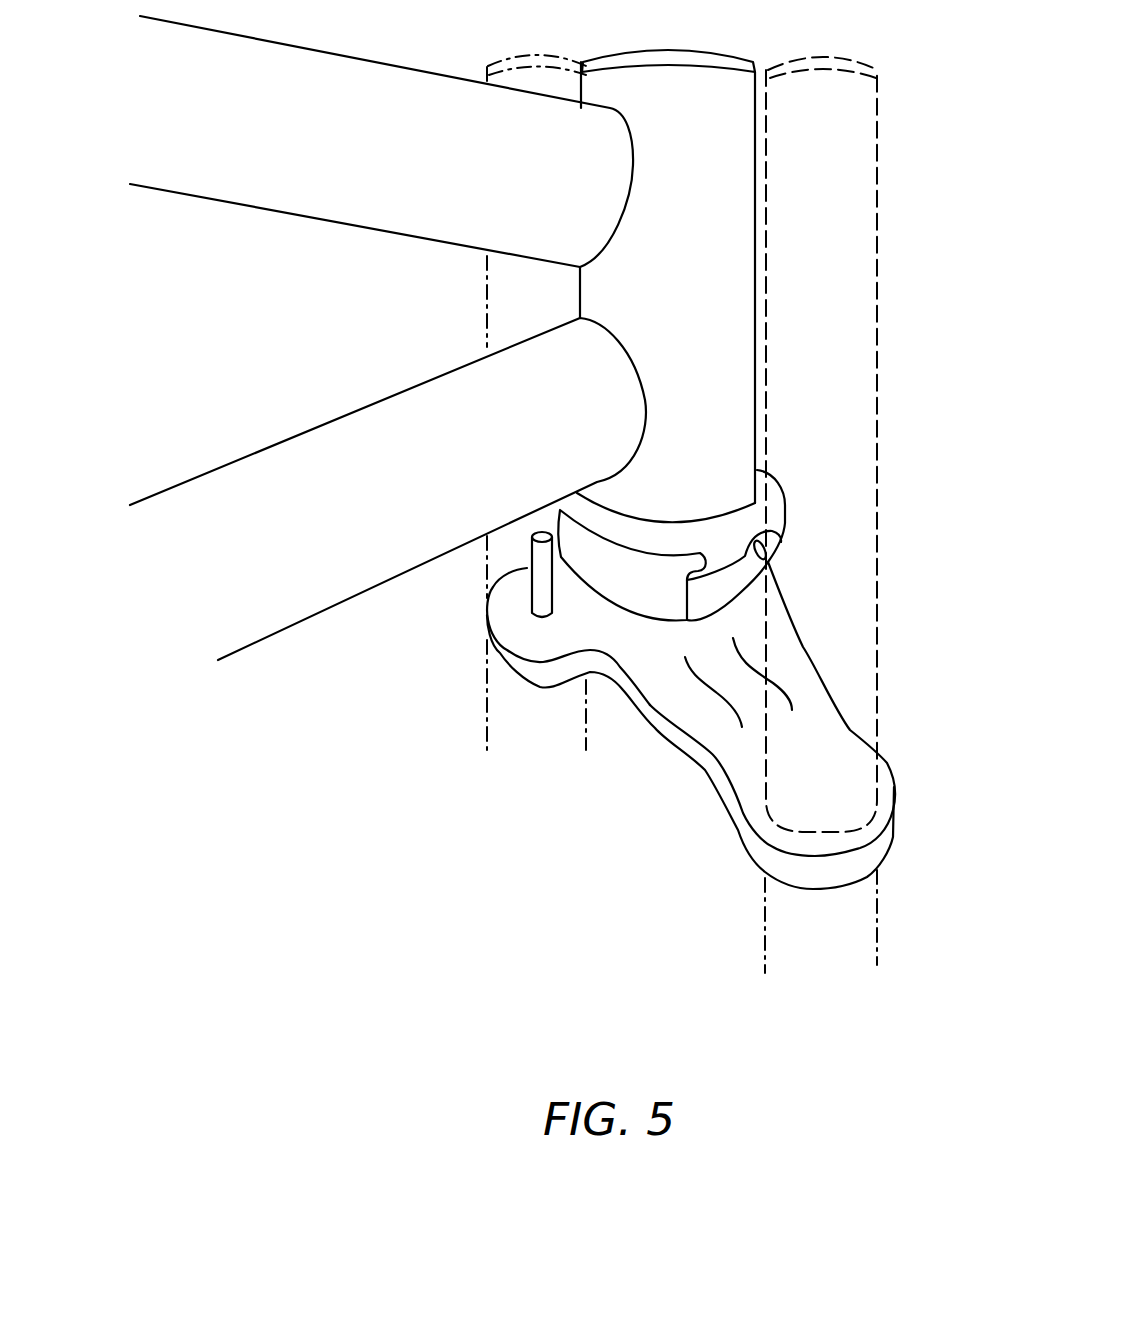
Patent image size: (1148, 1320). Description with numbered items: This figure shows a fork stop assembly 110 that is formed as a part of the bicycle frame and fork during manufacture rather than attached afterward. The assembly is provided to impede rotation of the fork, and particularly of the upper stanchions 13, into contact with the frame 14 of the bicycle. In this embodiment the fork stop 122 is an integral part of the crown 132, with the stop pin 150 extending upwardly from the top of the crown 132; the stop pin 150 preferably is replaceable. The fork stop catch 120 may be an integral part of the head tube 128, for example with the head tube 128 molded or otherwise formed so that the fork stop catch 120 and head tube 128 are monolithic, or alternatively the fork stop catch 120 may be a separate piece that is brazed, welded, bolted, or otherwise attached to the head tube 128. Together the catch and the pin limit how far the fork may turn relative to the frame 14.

The upper stanchions 13 is at (857, 315).
The frame 14 is at (315, 455).
The fork stop assembly 110 is at (423, 670).
The fork stop catch 120 is at (725, 552).
The fork stop 122 is at (507, 565).
The head tube 128 is at (694, 297).
The crown 132 is at (642, 725).
The stop pin 150 is at (533, 558).